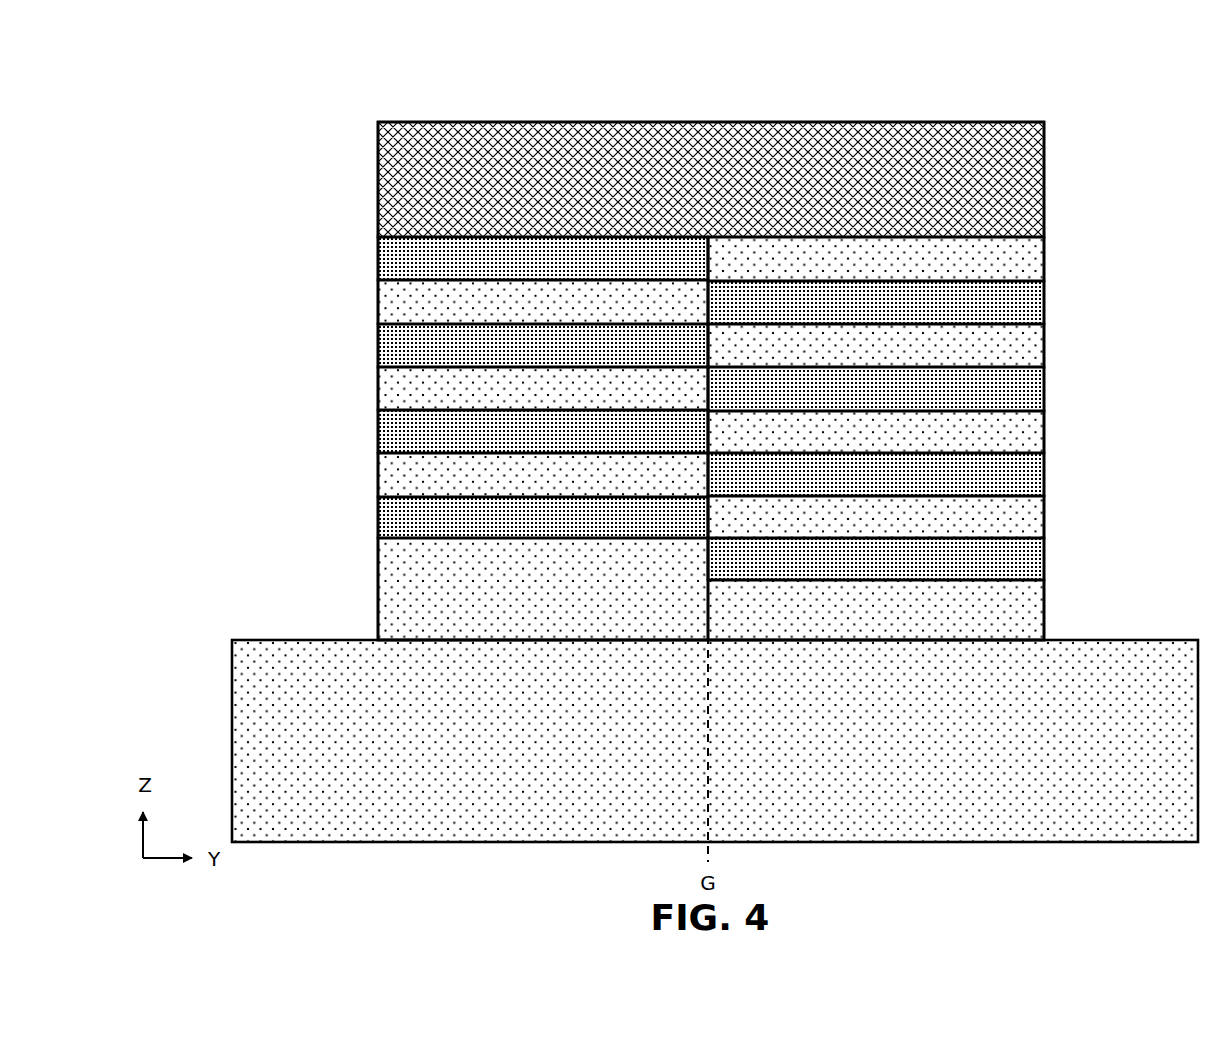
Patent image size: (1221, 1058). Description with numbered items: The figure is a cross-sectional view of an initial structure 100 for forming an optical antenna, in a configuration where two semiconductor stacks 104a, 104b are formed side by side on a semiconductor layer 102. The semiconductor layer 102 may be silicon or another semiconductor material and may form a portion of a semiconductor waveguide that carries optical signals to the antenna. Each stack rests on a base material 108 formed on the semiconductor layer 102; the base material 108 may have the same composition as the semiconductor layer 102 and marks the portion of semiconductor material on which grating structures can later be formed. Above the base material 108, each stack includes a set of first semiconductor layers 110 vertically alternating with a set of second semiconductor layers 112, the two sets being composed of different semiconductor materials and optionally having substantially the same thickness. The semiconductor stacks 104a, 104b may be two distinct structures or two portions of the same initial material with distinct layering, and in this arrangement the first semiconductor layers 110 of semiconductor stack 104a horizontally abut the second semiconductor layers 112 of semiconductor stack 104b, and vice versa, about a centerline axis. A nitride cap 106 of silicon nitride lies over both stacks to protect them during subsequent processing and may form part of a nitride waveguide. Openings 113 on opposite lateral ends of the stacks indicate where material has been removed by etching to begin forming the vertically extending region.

The initial structure 100 is at (1072, 122).
The semiconductor layer 102 is at (250, 737).
The semiconductor stack 104a is at (378, 88).
The semiconductor stack 104b is at (708, 88).
The nitride cap 106 is at (380, 137).
The base material 108 is at (1030, 612).
The first semiconductor layers 110 is at (407, 254).
The second semiconductor layers 112 is at (388, 303).
The openings 113 is at (268, 582).